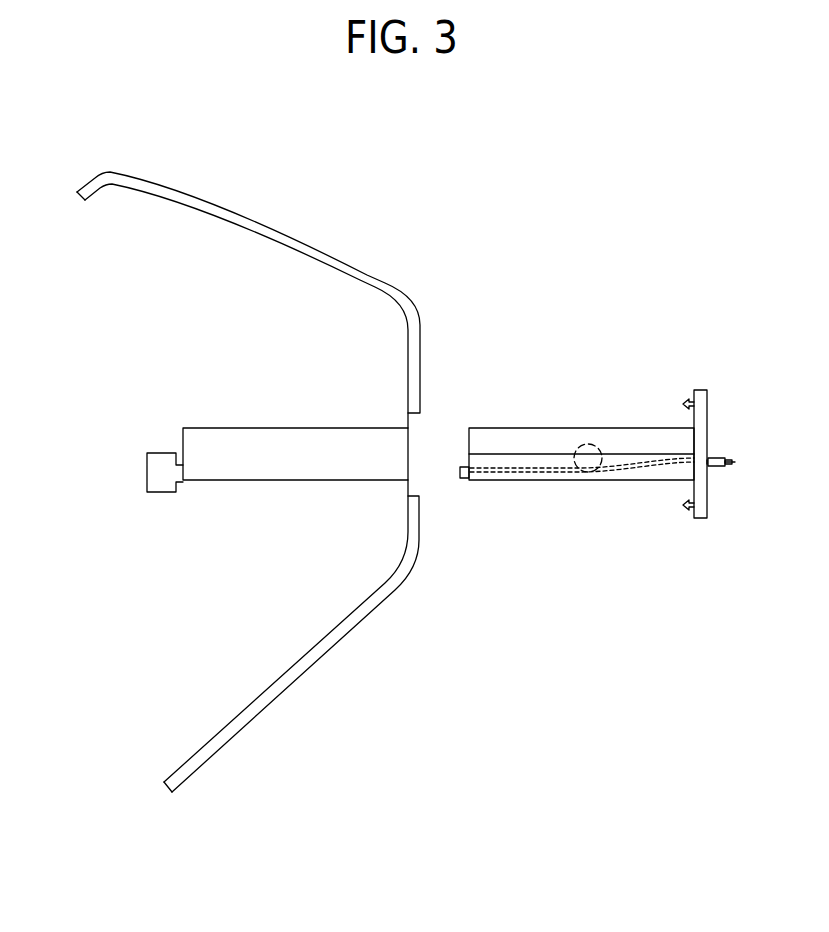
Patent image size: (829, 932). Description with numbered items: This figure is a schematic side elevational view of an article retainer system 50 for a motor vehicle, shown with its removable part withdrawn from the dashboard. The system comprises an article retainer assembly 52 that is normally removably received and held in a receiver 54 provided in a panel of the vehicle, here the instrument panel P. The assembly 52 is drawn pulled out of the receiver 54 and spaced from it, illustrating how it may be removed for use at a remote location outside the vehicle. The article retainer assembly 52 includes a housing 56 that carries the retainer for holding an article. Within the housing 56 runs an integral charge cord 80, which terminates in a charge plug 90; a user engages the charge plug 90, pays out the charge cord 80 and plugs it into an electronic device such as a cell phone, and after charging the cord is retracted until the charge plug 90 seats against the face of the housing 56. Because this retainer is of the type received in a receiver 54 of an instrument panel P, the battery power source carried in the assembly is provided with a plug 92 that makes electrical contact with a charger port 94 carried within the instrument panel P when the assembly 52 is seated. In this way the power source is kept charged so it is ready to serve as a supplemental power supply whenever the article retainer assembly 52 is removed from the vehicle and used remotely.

The article retainer system 50 is at (606, 385).
The instrument panel P is at (415, 330).
The article retainer assembly 52 is at (602, 457).
The receiver 54 is at (292, 452).
The housing 56 is at (631, 428).
The charge cord 80 is at (568, 472).
The charge plug 90 is at (722, 456).
The plug 92 is at (465, 480).
The charger port 94 is at (178, 472).